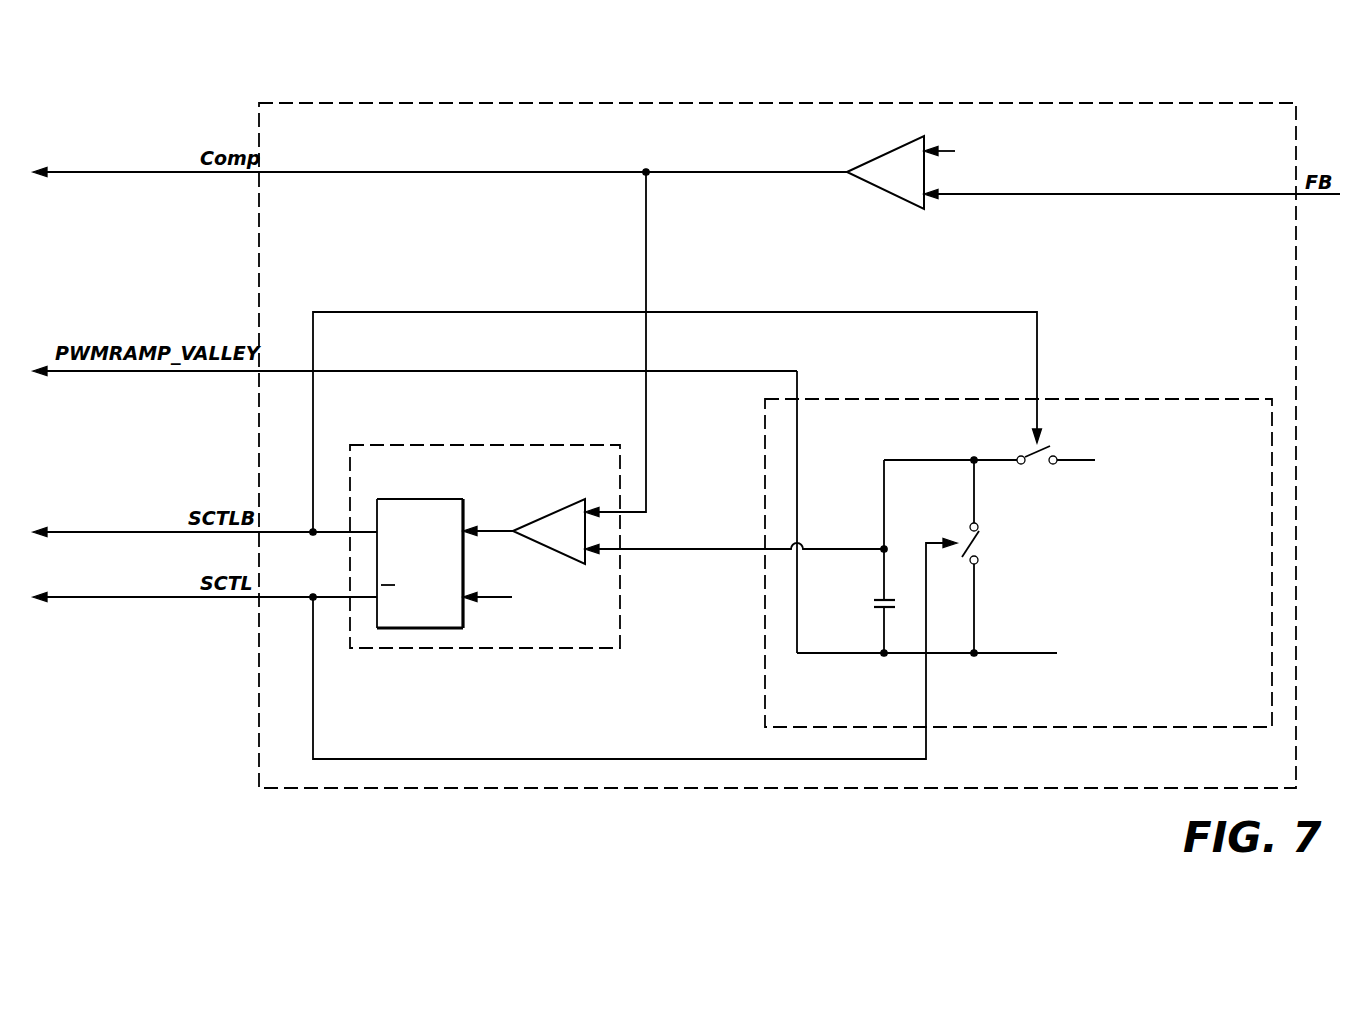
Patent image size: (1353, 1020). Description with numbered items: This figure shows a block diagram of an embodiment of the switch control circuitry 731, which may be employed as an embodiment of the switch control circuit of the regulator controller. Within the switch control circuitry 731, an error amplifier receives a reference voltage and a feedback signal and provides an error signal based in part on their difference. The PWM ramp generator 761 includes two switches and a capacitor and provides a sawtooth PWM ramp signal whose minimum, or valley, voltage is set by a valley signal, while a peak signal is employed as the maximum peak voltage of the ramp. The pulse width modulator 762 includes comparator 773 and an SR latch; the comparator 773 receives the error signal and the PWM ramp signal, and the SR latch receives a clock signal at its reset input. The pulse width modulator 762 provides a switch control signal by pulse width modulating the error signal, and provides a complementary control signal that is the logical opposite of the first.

The switch control circuitry 731 is at (316, 103).
The PWM ramp generator 761 is at (1213, 399).
The pulse width modulator 762 is at (398, 445).
The comparator 773 is at (543, 515).